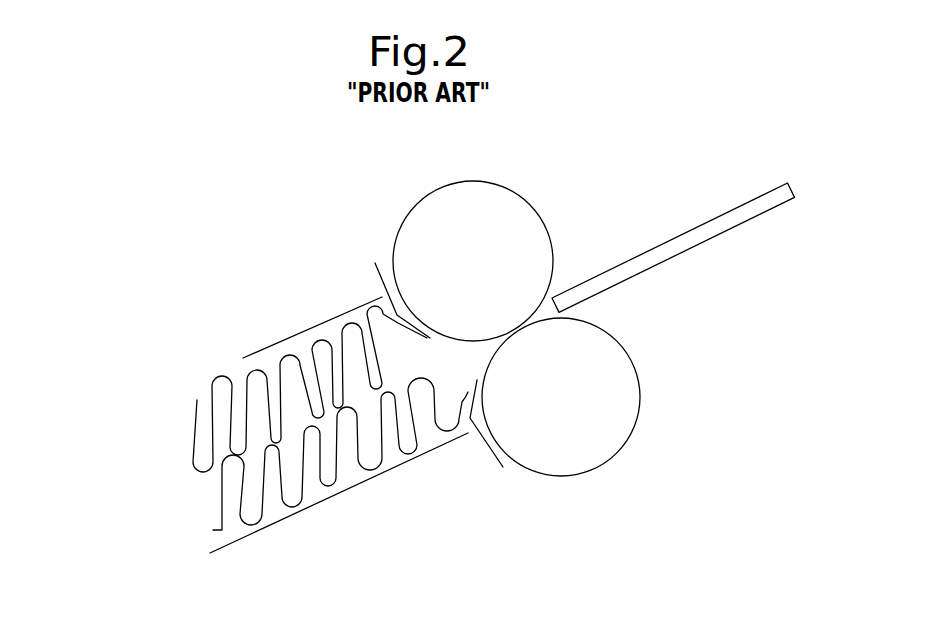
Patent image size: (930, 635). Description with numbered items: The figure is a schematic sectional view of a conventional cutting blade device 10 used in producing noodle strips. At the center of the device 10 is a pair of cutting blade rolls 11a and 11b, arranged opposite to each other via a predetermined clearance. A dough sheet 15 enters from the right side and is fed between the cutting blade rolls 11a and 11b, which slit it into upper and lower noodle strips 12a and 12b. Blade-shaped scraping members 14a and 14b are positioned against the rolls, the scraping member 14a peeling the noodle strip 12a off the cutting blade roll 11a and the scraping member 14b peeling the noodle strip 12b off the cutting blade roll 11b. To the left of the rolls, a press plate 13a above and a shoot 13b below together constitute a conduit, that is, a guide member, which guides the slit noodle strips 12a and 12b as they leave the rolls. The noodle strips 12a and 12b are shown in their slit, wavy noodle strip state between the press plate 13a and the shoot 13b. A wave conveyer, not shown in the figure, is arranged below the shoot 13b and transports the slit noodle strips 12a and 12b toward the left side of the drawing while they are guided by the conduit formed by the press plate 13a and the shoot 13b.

The cutting blade device 10 is at (562, 182).
The cutting blade roll 11a is at (473, 181).
The cutting blade roll 11b is at (610, 464).
The noodle strip 12a is at (193, 425).
The noodle strip 12b is at (220, 507).
The press plate 13a is at (285, 338).
The shoot 13b is at (362, 483).
The scraping member 14a is at (382, 283).
The scraping member 14b is at (490, 452).
The dough sheet 15 is at (690, 247).